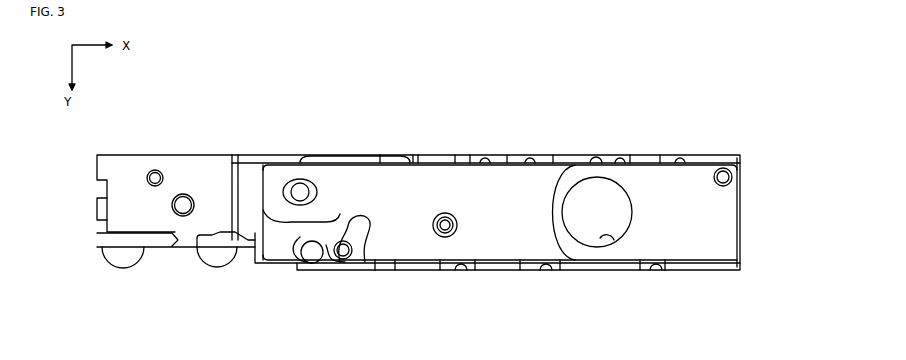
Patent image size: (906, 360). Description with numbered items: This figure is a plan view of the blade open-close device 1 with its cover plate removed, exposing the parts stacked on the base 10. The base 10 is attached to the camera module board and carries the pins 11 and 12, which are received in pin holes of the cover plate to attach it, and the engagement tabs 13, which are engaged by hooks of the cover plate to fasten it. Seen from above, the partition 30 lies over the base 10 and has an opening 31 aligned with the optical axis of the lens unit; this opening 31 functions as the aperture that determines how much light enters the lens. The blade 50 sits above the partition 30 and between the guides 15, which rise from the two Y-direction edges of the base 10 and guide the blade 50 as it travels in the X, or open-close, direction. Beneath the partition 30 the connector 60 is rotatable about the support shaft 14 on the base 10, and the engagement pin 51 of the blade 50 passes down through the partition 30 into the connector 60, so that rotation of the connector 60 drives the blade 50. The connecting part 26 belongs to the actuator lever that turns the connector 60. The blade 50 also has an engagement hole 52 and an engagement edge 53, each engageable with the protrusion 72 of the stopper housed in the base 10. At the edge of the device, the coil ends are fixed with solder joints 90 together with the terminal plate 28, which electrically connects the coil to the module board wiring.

The blade open-close device 1 is at (716, 94).
The base 10 is at (203, 163).
The pin 11 is at (152, 171).
The pin 12 is at (732, 177).
The engagement tab 13 is at (97, 209).
The support shaft 14 is at (343, 252).
The guide 15 is at (594, 158).
The connecting part 26 is at (315, 253).
The terminal plate 28 is at (157, 249).
The partition 30 is at (697, 253).
The opening 31 is at (600, 240).
The blade 50 is at (502, 170).
The engagement pin 51 is at (300, 190).
The engagement hole 52 is at (437, 236).
The engagement edge 53 is at (360, 222).
The connector 60 is at (330, 225).
The protrusion 72 is at (455, 224).
The solder joint 90 is at (120, 259).